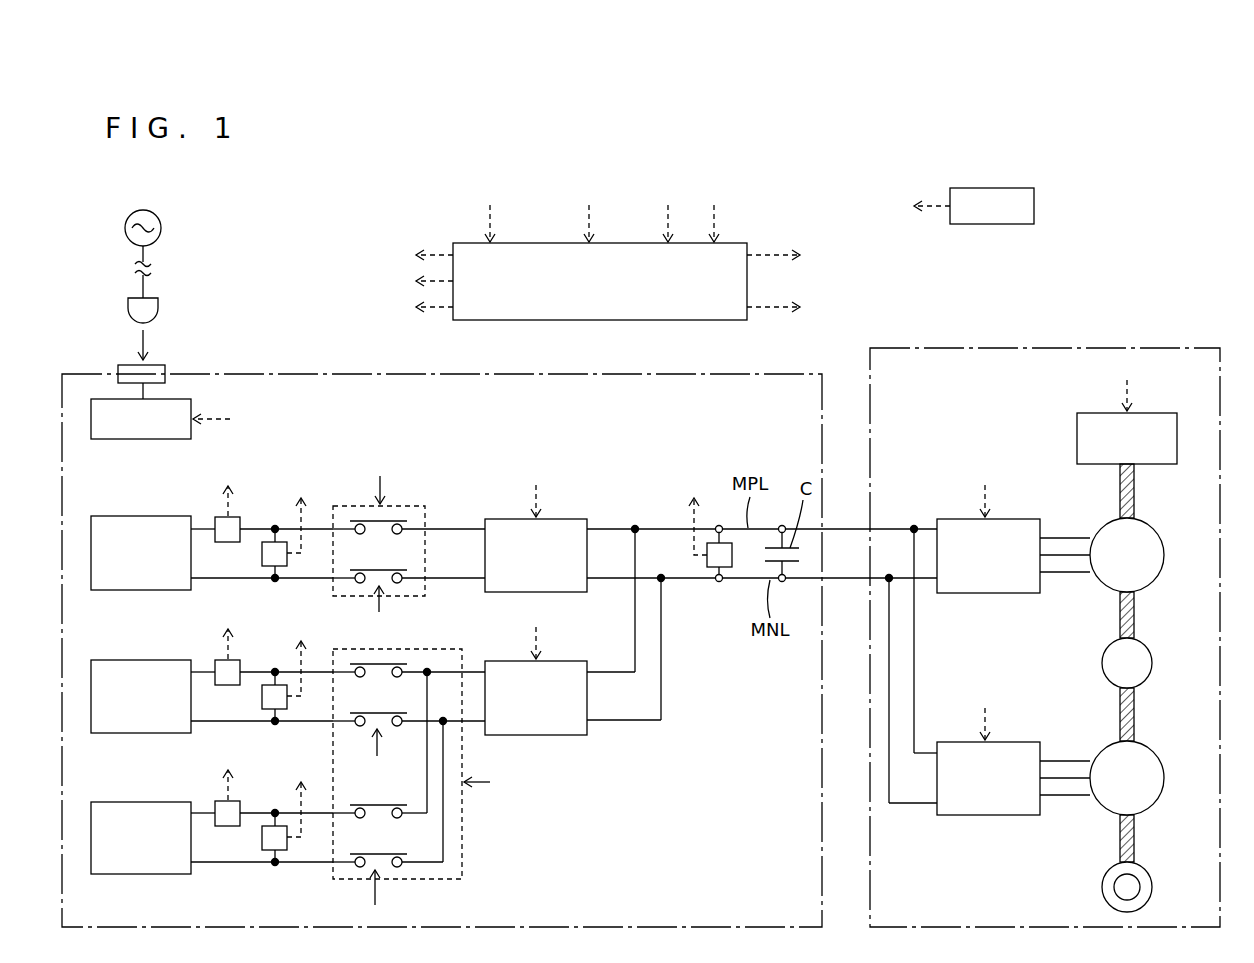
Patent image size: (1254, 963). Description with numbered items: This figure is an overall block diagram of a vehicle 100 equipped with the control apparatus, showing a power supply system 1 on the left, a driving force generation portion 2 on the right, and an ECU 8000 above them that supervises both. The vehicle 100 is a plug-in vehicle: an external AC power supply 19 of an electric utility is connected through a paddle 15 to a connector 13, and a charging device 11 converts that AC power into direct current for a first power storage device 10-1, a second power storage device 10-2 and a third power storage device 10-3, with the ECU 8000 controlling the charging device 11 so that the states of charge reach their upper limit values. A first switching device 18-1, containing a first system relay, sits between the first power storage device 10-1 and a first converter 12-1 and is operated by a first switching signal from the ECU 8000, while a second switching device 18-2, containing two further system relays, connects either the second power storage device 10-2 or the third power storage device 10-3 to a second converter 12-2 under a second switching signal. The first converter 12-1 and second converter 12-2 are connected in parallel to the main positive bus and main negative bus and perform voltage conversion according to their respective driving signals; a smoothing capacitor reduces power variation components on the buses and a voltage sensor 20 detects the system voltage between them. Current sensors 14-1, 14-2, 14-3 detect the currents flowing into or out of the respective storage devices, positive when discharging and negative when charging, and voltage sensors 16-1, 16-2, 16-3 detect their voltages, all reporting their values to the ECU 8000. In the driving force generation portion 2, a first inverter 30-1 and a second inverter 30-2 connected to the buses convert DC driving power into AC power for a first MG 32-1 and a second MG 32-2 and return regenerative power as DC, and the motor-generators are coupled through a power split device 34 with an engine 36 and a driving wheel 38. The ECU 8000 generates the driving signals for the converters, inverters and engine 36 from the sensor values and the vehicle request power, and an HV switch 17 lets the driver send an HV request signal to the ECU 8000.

The power supply system 1 is at (258, 375).
The driving force generation portion 2 is at (1020, 349).
The vehicle 100 is at (627, 151).
The ECU 8000 is at (668, 320).
The HV switch 17 is at (990, 188).
The AC power supply 19 is at (160, 218).
The paddle 15 is at (158, 302).
The connector 13 is at (152, 365).
The charging device 11 is at (110, 440).
The first power storage device 10-1 is at (125, 516).
The second power storage device 10-2 is at (125, 660).
The third power storage device 10-3 is at (125, 802).
The current sensor 14-1 is at (228, 542).
The current sensor 14-2 is at (228, 685).
The current sensor 14-3 is at (228, 826).
The voltage sensor 16-1 is at (262, 550).
The voltage sensor 16-2 is at (262, 693).
The voltage sensor 16-3 is at (262, 834).
The first switching device 18-1 is at (425, 594).
The second switching device 18-2 is at (462, 845).
The first converter 12-1 is at (560, 518).
The second converter 12-2 is at (560, 660).
The voltage sensor 20 is at (732, 560).
The first inverter 30-1 is at (1010, 518).
The second inverter 30-2 is at (1010, 741).
The first MG 32-1 is at (1152, 526).
The second MG 32-2 is at (1152, 749).
The power split device 34 is at (1148, 648).
The engine 36 is at (1077, 432).
The driving wheel 38 is at (1102, 887).